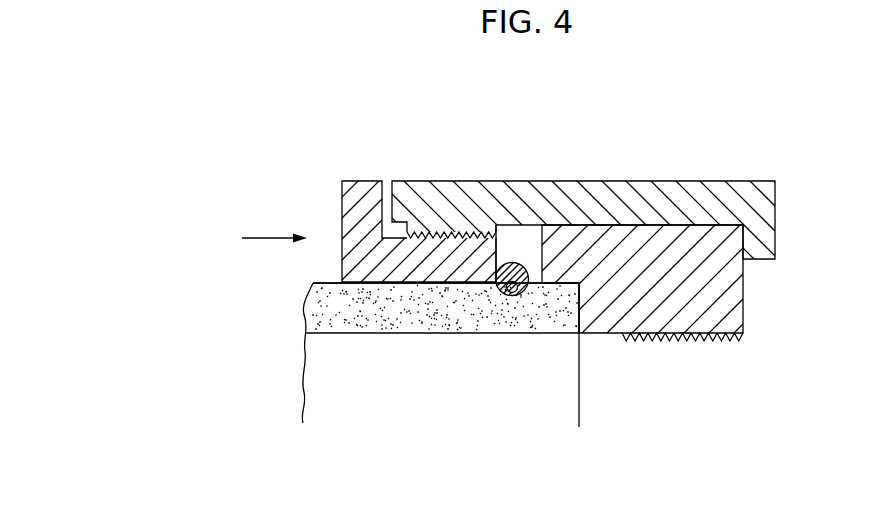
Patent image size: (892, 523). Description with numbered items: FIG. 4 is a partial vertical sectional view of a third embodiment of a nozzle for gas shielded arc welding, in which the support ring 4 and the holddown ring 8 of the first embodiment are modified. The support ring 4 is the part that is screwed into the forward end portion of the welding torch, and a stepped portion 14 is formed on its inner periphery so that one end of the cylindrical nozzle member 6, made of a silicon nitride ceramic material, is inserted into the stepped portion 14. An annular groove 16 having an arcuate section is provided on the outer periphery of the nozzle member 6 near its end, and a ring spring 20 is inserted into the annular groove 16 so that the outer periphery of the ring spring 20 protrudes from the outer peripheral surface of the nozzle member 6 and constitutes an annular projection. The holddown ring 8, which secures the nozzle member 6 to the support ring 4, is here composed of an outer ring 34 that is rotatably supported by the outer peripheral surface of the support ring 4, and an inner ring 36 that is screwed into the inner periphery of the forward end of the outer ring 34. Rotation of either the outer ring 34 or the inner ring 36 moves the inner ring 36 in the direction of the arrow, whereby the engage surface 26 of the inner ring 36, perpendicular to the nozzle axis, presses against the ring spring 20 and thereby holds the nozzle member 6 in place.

The support ring 4 is at (652, 320).
The nozzle member 6 is at (377, 315).
The holddown ring 8 is at (591, 175).
The stepped portion 14 is at (573, 305).
The annular groove 16 is at (502, 290).
The ring spring 20 is at (515, 264).
The engage surface 26 is at (503, 258).
The outer ring 34 is at (645, 192).
The inner ring 36 is at (422, 257).